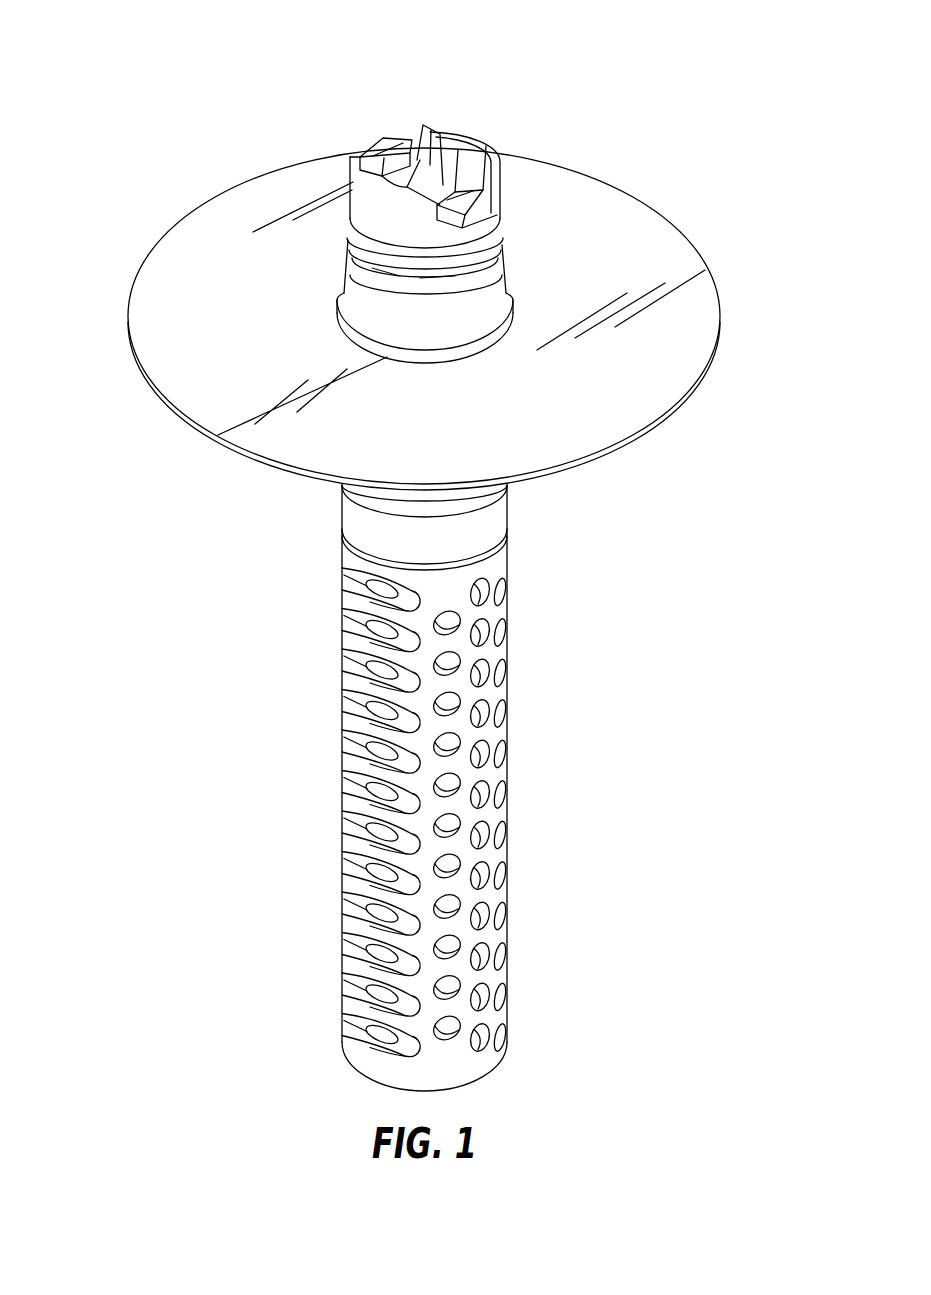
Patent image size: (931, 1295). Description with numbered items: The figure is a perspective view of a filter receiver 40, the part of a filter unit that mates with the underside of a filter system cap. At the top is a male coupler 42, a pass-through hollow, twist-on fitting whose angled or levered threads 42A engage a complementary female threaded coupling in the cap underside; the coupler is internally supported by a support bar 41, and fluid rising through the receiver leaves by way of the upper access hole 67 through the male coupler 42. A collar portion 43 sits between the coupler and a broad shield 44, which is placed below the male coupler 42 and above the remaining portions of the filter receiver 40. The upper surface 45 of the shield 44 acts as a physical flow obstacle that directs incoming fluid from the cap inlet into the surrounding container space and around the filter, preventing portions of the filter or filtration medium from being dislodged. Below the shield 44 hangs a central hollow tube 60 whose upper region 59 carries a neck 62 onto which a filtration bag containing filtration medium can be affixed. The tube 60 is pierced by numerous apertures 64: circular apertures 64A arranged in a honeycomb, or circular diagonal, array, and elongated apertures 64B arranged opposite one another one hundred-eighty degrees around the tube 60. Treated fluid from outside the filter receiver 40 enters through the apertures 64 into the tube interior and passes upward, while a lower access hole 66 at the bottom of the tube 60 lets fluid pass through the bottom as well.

The filter receiver 40 is at (128, 65).
The support bar 41 is at (427, 127).
The male coupler 42 is at (453, 135).
The angled threads 42A is at (507, 198).
The collar 43 is at (473, 243).
The shield 44 is at (133, 283).
The upper surface 45 is at (587, 385).
The shaft 59 is at (340, 508).
The central hollow tube 60 is at (522, 855).
The neck 62 is at (510, 502).
The apertures 64 is at (508, 635).
The circular apertures 64A is at (508, 720).
The elongated apertures 64B is at (370, 706).
The lower access hole 66 is at (475, 1075).
The upper access hole 67 is at (410, 135).